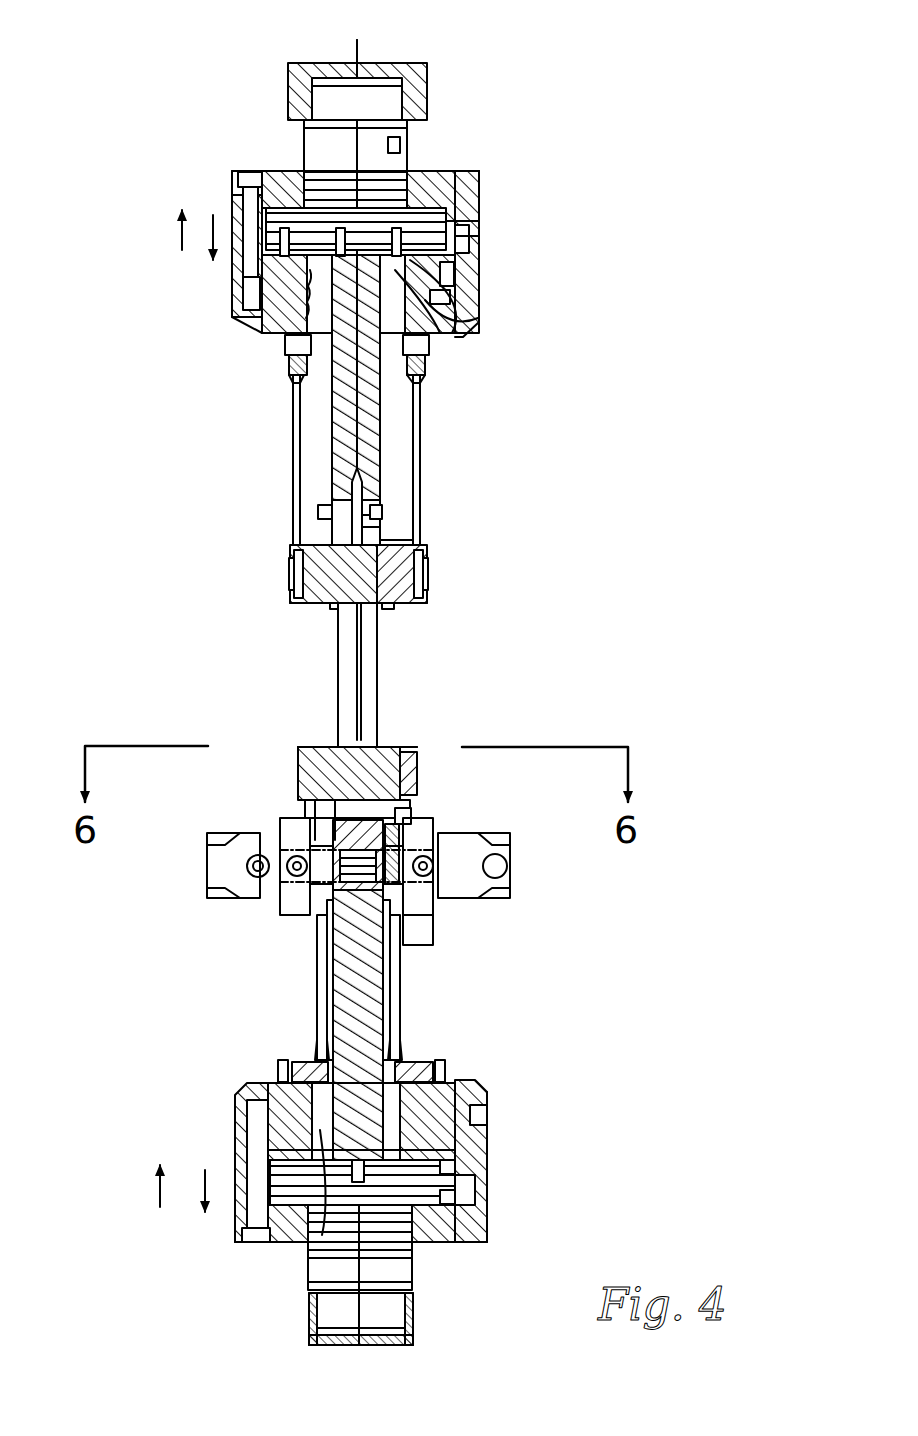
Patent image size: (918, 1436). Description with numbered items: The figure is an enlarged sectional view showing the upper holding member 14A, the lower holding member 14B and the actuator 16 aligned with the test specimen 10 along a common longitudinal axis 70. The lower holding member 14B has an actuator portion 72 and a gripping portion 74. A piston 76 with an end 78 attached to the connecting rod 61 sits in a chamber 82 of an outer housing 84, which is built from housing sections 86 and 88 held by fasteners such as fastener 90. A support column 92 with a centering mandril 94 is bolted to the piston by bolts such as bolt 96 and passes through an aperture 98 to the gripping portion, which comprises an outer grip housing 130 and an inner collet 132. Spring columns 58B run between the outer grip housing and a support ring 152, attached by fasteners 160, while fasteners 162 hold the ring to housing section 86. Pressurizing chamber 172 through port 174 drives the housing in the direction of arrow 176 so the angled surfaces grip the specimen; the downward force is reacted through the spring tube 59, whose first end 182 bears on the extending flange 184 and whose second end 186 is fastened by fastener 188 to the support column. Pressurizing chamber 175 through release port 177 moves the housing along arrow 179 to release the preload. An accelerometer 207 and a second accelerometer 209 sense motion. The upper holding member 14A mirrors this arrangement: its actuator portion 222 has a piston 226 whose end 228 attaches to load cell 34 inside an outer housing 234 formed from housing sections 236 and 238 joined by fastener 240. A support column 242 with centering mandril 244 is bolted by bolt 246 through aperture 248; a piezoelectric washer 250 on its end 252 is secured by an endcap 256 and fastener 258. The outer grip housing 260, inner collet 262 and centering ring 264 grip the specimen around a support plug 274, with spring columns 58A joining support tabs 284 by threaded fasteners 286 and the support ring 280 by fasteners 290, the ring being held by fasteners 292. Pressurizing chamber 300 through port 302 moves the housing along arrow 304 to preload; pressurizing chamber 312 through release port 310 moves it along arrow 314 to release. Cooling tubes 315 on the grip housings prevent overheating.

The test specimen 10 is at (378, 660).
The upper holding member 14A is at (538, 294).
The lower holding member 14B is at (588, 1010).
The actuator 16 is at (515, 866).
The load cell 34 is at (428, 76).
The spring columns 58A is at (294, 420).
The spring columns 58B is at (320, 962).
The spring tube 59 is at (333, 937).
The connecting rod 61 is at (413, 1318).
The longitudinal axis 70 is at (357, 60).
The actuator portion 72 is at (494, 1130).
The gripping portion 74 is at (414, 758).
The piston 76 is at (432, 1242).
The end 78 is at (413, 1300).
The chamber 82 is at (490, 1112).
The outer housing 84 is at (490, 1082).
The housing section 86 is at (475, 1092).
The housing section 88 is at (458, 1182).
The fastener 90 is at (245, 1240).
The support column 92 is at (385, 972).
The centering mandril 94 is at (322, 1236).
The bolt 96 is at (450, 1085).
The aperture 98 is at (285, 1065).
The outer grip housing 130 is at (298, 770).
The inner collet 132 is at (405, 748).
The support ring 152 is at (320, 1060).
The fastener 160 is at (402, 1060).
The fasteners 162 is at (300, 1065).
The chamber 172 is at (475, 1200).
The port 174 is at (478, 1212).
The chamber 175 is at (475, 1166).
The arrow 176 is at (205, 1172).
The release port 177 is at (458, 1150).
The arrow 179 is at (156, 1180).
The first end 182 is at (402, 816).
The extending flange 184 is at (408, 796).
The second end 186 is at (268, 1085).
The fastener 188 is at (255, 1106).
The accelerometer 207 is at (310, 806).
The second accelerometer 209 is at (328, 520).
The actuator portion 222 is at (483, 238).
The piston 226 is at (410, 160).
The end 228 is at (405, 96).
The outer housing 234 is at (482, 200).
The housing section 236 is at (447, 325).
The housing section 238 is at (402, 143).
The fastener 240 is at (250, 174).
The support column 242 is at (383, 440).
The centering mandril 244 is at (330, 215).
The bolt 246 is at (435, 318).
The aperture 248 is at (420, 383).
The piezoelectric washer 250 is at (380, 515).
The end 252 is at (384, 505).
The endcap 256 is at (382, 527).
The fastener 258 is at (352, 480).
The outer grip housing 260 is at (395, 606).
The inner collet 262 is at (332, 606).
The centering ring 264 is at (420, 540).
The support plug 274 is at (305, 552).
The support ring 280 is at (297, 370).
The support tabs 284 is at (292, 574).
The threaded fasteners 286 is at (292, 598).
The fasteners 290 is at (285, 340).
The fasteners 292 is at (296, 360).
The chamber 300 is at (485, 186).
The port 302 is at (450, 223).
The arrow 304 is at (176, 228).
The release port 310 is at (455, 288).
The chamber 312 is at (425, 305).
The arrow 314 is at (210, 215).
The cooling tubes 315 is at (296, 605).